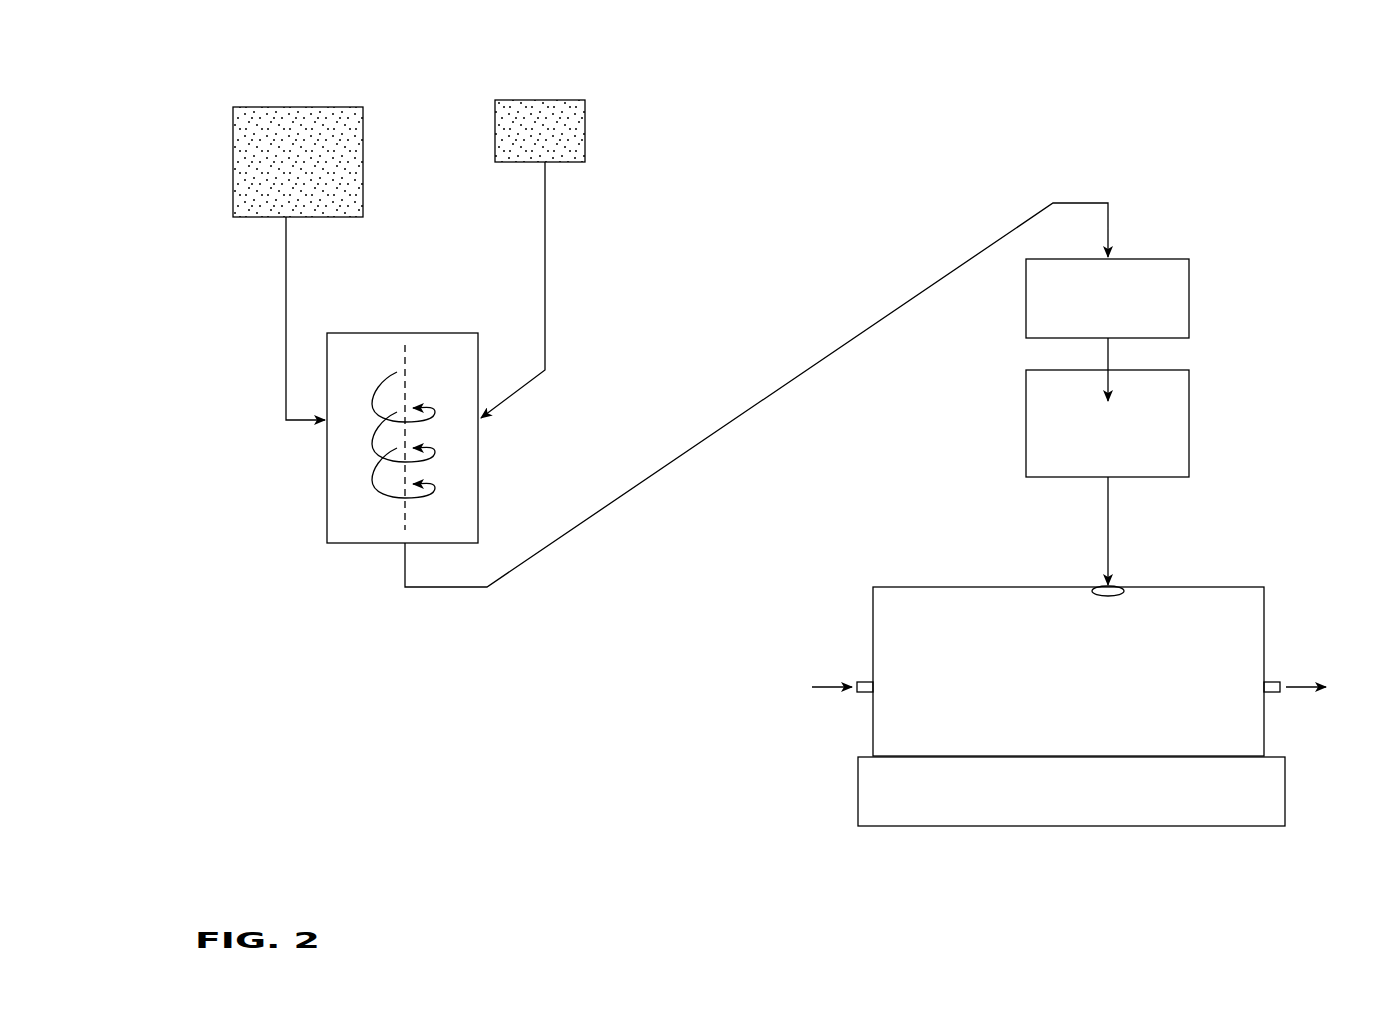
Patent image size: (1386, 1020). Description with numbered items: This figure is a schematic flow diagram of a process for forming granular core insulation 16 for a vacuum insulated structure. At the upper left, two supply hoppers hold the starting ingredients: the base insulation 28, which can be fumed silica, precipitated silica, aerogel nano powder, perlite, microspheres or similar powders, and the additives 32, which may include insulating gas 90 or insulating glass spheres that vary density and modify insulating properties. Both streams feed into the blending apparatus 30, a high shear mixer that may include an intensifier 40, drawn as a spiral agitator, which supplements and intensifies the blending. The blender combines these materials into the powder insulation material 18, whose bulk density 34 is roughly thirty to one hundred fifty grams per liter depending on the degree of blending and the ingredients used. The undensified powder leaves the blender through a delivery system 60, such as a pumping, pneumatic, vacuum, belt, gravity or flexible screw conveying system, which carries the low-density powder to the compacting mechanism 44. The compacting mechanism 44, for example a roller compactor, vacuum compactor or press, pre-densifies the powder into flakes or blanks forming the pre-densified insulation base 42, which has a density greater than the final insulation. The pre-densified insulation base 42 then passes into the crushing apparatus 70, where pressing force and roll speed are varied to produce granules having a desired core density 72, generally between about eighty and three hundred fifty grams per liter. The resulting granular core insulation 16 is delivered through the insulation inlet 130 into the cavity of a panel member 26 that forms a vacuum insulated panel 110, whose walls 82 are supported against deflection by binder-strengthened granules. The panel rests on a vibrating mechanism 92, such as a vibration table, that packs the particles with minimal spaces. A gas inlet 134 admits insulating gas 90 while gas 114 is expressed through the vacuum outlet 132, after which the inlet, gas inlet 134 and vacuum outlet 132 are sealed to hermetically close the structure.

The powder insulation material 18 is at (306, 131).
The base insulation 28 is at (381, 141).
The additives 32 is at (527, 97).
The bulk density 34 is at (246, 180).
The blending apparatus 30 is at (320, 467).
The intensifier 40 is at (440, 430).
The delivery system 60 is at (772, 402).
The compacting mechanism 44 is at (1196, 293).
The pre-densified insulation base 42 is at (1110, 355).
The crushing apparatus 70 is at (1196, 422).
The core density 72 is at (1100, 533).
The granular core insulation 16 is at (1110, 510).
The insulation inlet 130 is at (1092, 590).
The vacuum insulated panel 110 is at (1272, 585).
The gas inlet 134 is at (865, 680).
The insulating gas 90 is at (828, 684).
The vacuum outlet 132 is at (1272, 695).
The gas 114 is at (1297, 686).
The vibrating mechanism 92 is at (1180, 805).
The walls 82 is at (978, 735).
The panel member 26 is at (1088, 762).